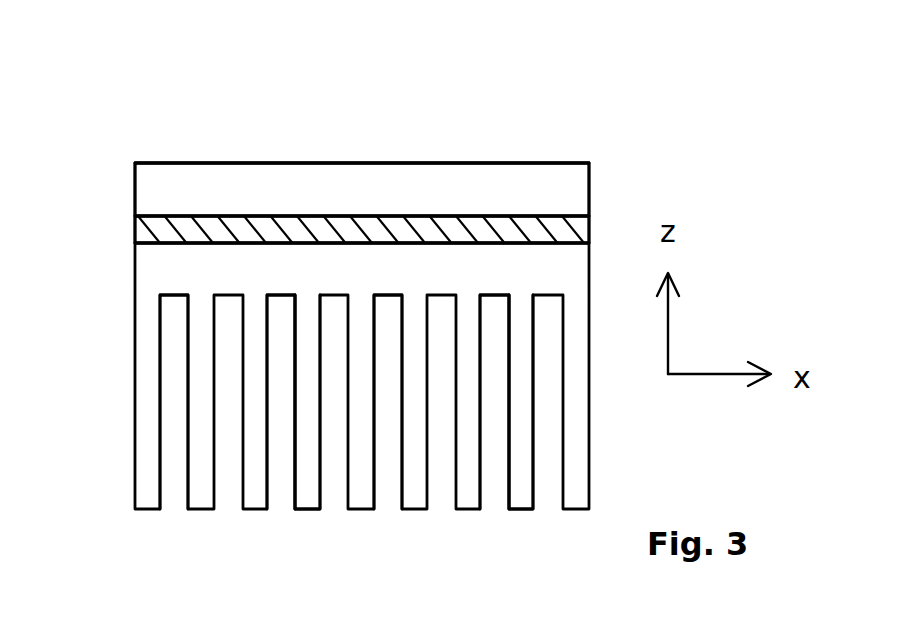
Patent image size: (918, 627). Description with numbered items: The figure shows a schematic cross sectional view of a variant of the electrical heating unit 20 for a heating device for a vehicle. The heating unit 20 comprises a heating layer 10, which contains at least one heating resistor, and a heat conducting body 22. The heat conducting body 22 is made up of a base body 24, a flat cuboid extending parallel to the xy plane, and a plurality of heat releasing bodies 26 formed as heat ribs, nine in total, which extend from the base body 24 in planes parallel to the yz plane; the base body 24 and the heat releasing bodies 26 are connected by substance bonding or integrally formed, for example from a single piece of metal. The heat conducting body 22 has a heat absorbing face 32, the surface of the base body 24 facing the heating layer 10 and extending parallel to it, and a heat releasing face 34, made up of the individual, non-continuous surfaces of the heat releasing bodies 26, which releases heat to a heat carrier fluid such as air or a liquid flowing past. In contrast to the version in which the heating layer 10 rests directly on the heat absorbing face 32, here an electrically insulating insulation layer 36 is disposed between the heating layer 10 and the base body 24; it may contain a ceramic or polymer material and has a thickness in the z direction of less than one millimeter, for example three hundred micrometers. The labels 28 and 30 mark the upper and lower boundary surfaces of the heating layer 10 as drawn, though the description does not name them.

The heating layer 10 is at (150, 188).
The electrical heating unit 20 is at (337, 128).
The heat conducting body 22 is at (156, 277).
The base body 24 is at (383, 281).
The heat releasing bodies 26 is at (307, 495).
The top surface of cover layer 28 is at (541, 164).
The bottom surface of cover layer 30 is at (333, 215).
The heat absorbing face 32 is at (561, 244).
The heat releasing face 34 is at (292, 446).
The insulation layer 36 is at (158, 232).